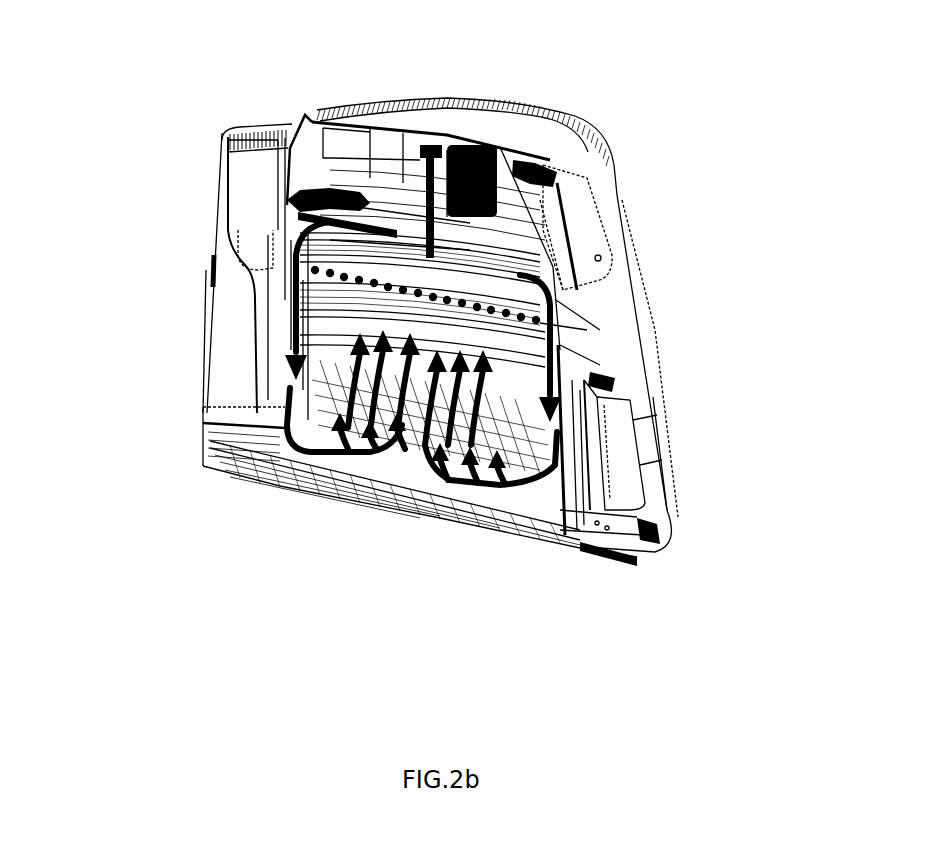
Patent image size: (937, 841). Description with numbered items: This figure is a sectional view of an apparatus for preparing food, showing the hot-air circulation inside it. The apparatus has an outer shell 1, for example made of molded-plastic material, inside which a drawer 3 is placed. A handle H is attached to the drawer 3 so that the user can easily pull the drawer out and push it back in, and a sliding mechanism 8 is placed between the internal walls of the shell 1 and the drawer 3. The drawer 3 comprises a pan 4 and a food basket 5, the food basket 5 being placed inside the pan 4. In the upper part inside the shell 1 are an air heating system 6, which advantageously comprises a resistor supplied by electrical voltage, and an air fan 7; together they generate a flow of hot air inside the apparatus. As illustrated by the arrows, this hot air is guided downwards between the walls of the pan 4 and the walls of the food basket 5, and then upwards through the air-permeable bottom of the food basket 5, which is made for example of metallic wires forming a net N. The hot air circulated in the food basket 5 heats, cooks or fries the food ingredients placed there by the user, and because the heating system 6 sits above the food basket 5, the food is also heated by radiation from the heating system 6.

The shell 1 is at (620, 260).
The drawer 3 is at (636, 342).
The pan 4 is at (262, 378).
The food basket 5 is at (250, 322).
The air heating system 6 is at (447, 267).
The air fan 7 is at (385, 200).
The sliding mechanism 8 is at (352, 462).
The net N is at (225, 472).
The handle H is at (667, 463).